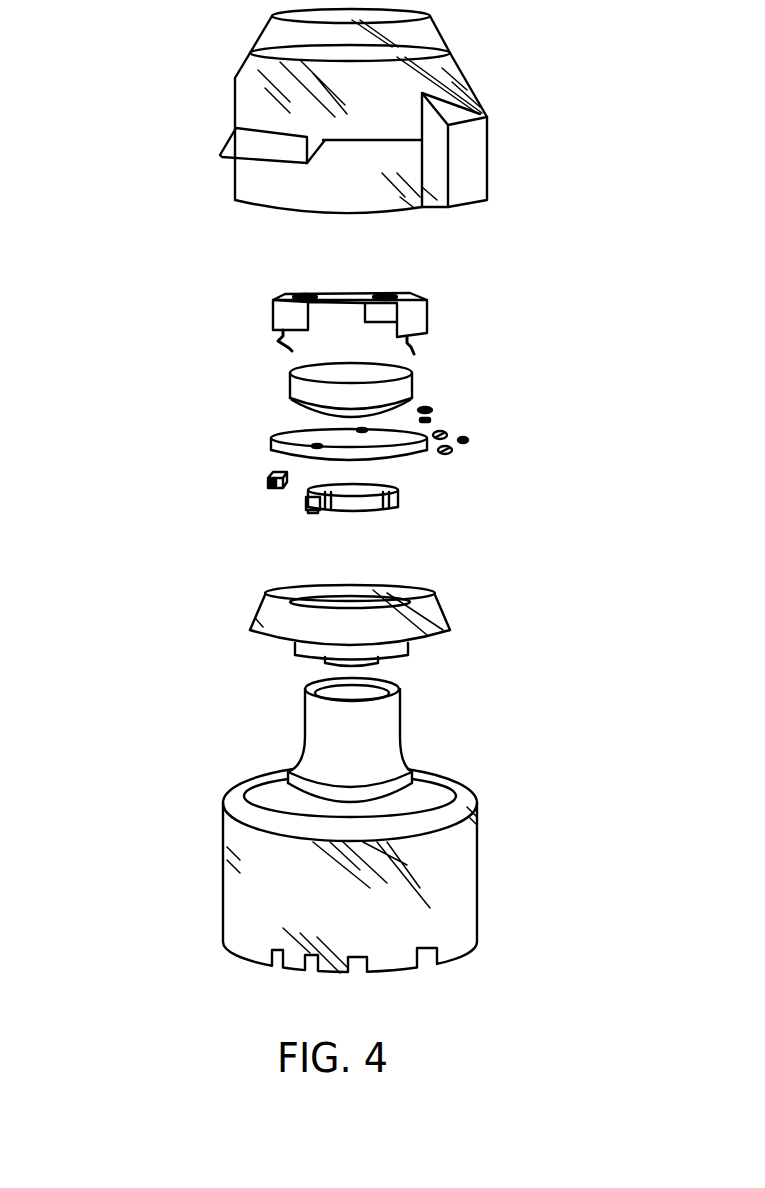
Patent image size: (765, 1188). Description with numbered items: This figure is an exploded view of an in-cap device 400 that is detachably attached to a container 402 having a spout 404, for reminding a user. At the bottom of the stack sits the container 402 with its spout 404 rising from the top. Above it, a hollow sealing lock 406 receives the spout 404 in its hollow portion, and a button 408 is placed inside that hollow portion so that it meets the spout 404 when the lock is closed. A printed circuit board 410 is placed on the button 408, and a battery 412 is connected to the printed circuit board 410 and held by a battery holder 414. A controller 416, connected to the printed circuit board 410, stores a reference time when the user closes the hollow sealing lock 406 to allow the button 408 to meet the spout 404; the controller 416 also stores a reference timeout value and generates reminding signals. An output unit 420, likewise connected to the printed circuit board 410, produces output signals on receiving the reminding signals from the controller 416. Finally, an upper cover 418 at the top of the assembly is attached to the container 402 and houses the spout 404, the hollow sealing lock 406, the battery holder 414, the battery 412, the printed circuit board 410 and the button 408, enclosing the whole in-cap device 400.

The in-cap device 400 is at (100, 172).
The container 402 is at (242, 877).
The spout 404 is at (322, 723).
The hollow sealing lock 406 is at (252, 623).
The button 408 is at (398, 497).
The printed circuit board 410 is at (270, 445).
The battery 412 is at (415, 385).
The battery holder 414 is at (422, 322).
The controller 416 is at (267, 489).
The upper cover 418 is at (470, 75).
The output unit 420 is at (478, 423).